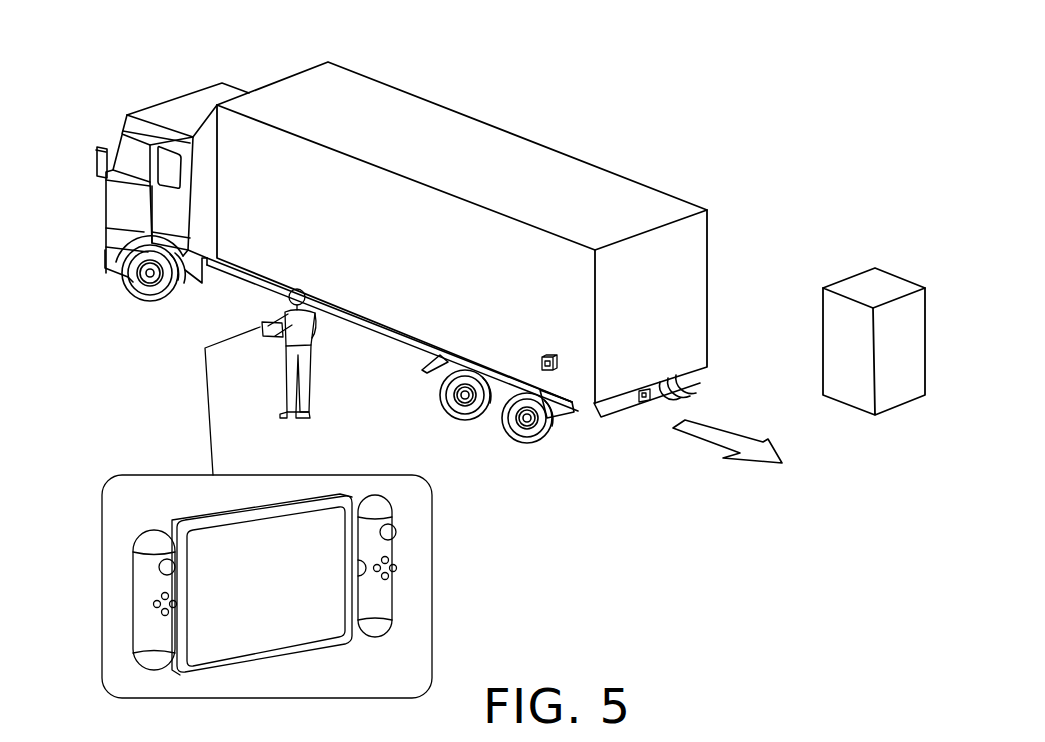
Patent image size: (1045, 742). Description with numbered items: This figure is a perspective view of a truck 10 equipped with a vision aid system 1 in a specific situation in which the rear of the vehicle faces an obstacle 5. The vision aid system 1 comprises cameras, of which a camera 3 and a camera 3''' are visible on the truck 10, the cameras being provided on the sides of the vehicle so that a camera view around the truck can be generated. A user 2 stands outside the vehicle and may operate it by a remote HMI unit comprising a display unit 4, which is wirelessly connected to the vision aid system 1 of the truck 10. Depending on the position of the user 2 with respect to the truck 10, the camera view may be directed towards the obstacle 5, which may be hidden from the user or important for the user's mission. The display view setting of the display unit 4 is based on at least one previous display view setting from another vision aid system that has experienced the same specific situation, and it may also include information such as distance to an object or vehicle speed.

The vision aid system 1 is at (560, 97).
The truck 10 is at (367, 127).
The user 2 is at (327, 353).
The camera 3 is at (592, 432).
The camera 3''' is at (672, 445).
The display unit 4 is at (283, 592).
The obstacle 5 is at (875, 290).